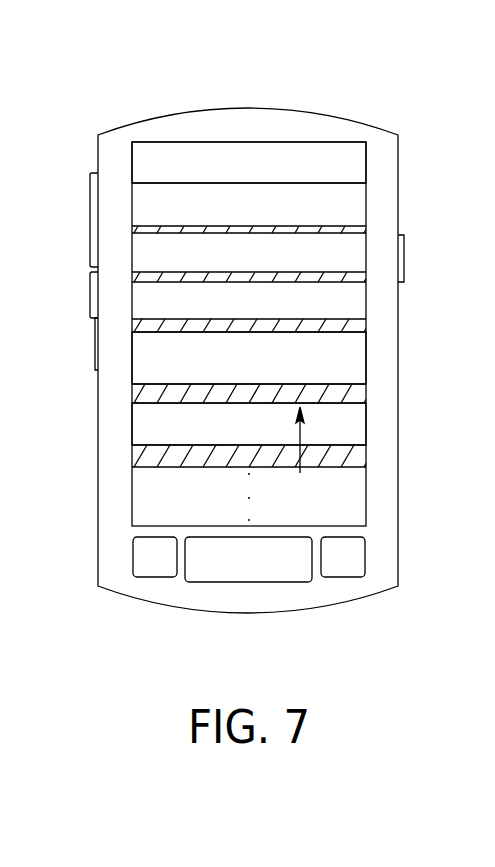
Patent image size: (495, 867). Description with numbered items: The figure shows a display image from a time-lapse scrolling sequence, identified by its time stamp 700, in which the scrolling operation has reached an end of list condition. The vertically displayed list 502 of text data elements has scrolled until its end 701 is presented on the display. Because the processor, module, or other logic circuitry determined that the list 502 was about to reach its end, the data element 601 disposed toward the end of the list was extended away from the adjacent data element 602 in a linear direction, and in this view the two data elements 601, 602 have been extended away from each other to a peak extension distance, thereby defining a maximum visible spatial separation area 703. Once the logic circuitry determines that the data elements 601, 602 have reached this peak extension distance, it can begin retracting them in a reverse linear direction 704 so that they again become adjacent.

The time stamp 700 is at (290, 655).
The list 502 is at (132, 240).
The end of the list 701 is at (168, 160).
The adjacent data element 602 is at (147, 363).
The data element 601 is at (147, 430).
The maximum visible spatial separation area 703 is at (365, 394).
The reverse linear direction 704 is at (305, 433).